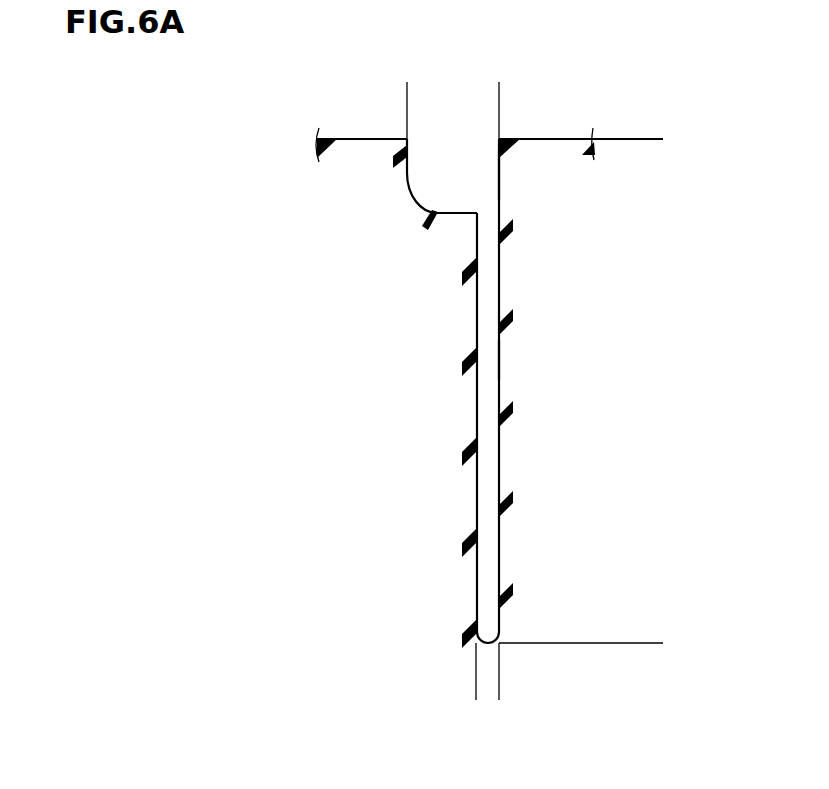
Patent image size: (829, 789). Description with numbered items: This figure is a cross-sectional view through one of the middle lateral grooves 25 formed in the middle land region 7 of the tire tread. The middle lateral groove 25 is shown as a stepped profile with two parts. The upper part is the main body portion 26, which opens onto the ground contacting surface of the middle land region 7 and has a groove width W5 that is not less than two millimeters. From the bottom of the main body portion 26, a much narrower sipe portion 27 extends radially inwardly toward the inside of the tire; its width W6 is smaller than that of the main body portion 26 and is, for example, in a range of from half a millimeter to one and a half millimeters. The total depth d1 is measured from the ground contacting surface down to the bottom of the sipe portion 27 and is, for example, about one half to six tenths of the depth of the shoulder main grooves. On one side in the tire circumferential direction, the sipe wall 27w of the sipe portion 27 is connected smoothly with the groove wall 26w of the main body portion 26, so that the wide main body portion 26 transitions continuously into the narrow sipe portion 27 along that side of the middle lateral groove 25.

The middle land region 7 is at (362, 138).
The middle lateral groove 25 is at (363, 393).
The main body portion 26 is at (445, 192).
The sipe portion 27 is at (497, 328).
The groove wall 26w is at (497, 193).
The sipe wall 27w is at (500, 358).
The groove width W5 is at (407, 88).
The width of sipe portion W6 is at (535, 694).
The depth d1 is at (659, 139).